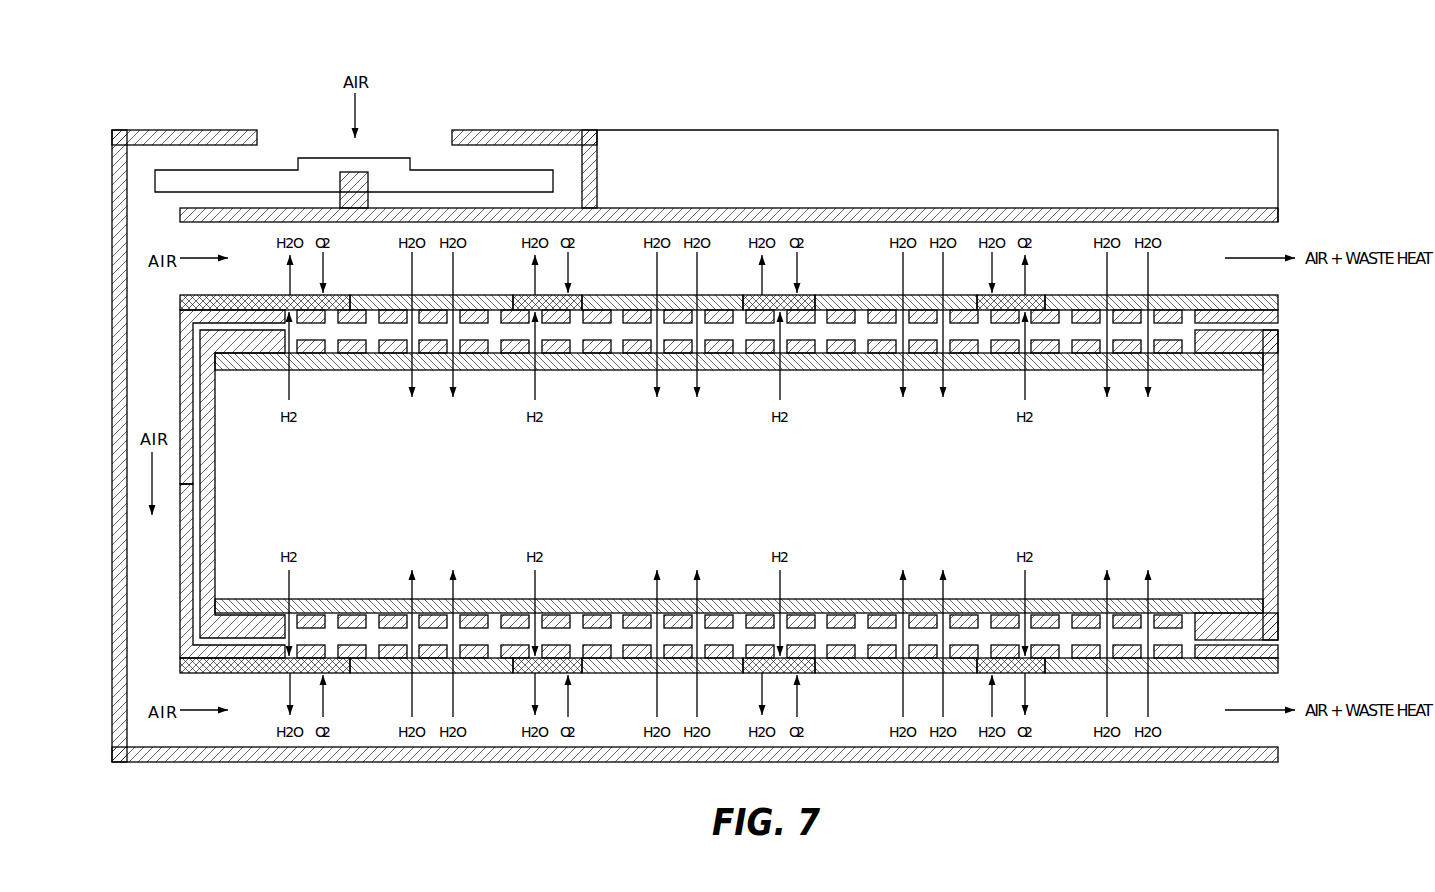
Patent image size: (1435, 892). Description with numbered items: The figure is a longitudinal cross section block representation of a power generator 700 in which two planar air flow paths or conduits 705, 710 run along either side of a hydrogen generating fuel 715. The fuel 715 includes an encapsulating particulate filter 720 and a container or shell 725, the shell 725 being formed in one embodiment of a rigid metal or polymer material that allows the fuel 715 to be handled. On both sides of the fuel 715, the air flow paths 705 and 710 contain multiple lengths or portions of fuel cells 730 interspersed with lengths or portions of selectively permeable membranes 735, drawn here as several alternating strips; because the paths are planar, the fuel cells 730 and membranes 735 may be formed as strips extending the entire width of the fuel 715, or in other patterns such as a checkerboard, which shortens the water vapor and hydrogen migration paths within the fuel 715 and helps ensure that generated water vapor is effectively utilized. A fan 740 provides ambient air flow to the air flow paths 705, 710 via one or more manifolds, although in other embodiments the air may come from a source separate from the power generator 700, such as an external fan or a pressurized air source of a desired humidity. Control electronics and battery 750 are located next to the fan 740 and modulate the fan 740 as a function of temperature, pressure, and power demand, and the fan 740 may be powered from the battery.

The power generator 700 is at (1298, 77).
The air flow path 705 is at (228, 275).
The air flow path 710 is at (228, 695).
The hydrogen generating fuel 715 is at (1245, 487).
The encapsulating particulate filter 720 is at (1240, 362).
The container or shell 725 is at (1265, 338).
The fuel cells 730 is at (345, 296).
The selectively permeable membranes 735 is at (479, 295).
The fan 740 is at (372, 158).
The control electronics and battery 750 is at (1265, 170).